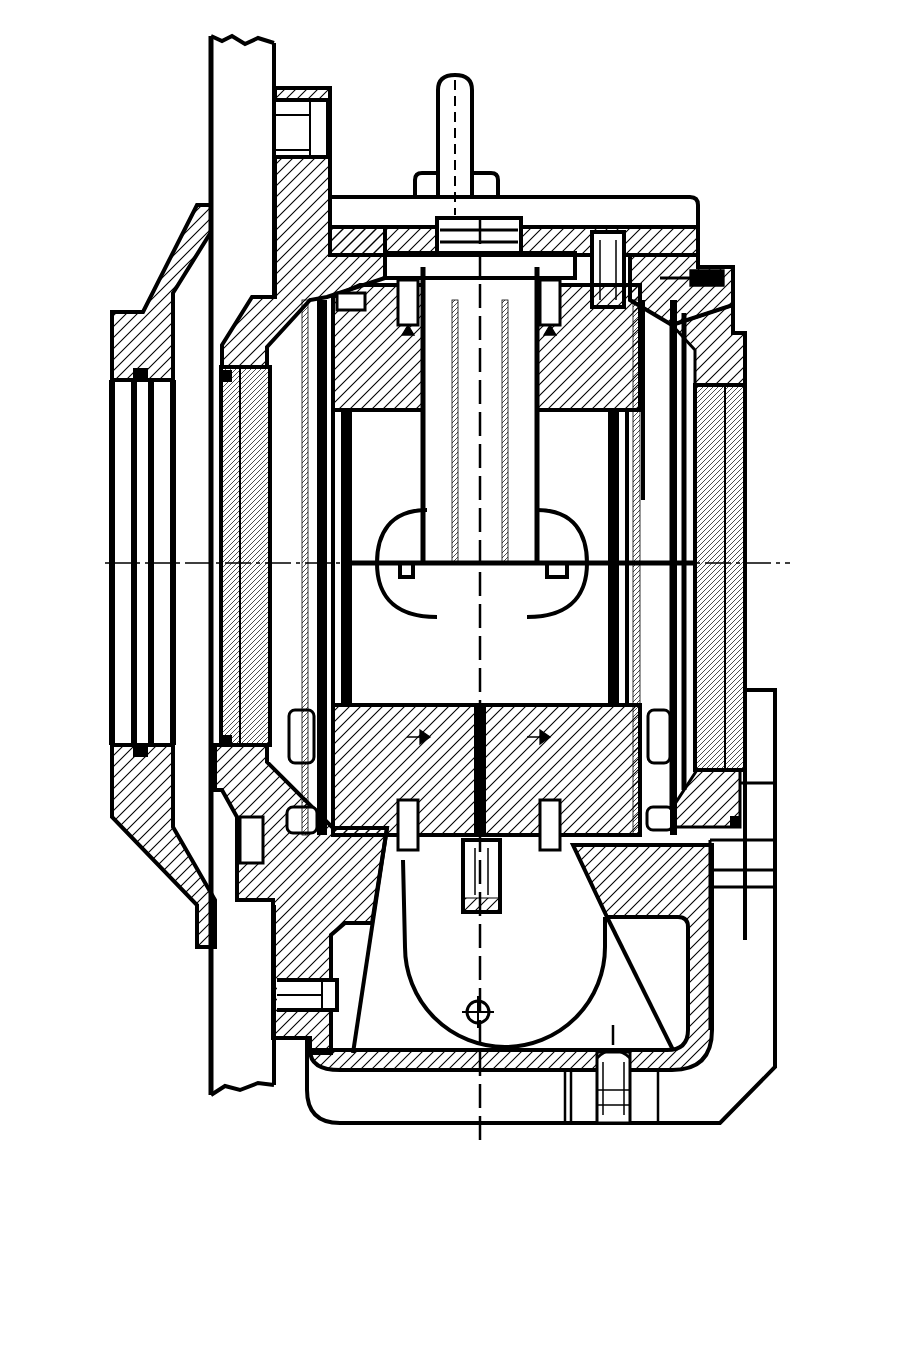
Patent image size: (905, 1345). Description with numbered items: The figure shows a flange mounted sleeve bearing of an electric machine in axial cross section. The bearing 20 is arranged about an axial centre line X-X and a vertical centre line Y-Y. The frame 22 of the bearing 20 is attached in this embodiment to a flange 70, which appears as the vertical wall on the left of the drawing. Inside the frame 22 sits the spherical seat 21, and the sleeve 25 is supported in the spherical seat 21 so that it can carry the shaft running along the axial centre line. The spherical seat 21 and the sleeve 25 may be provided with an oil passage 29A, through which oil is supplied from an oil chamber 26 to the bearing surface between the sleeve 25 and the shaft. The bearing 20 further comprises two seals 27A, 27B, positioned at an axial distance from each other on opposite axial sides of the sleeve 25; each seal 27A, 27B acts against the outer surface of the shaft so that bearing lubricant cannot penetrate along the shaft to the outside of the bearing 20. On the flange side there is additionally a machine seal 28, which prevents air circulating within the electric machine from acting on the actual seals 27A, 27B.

The bearing 20 is at (608, 63).
The flange 70 is at (228, 92).
The spherical seat 21 is at (383, 335).
The frame 22 is at (662, 237).
The sleeve 25 is at (388, 425).
The oil chamber 26 is at (492, 286).
The seal 27A is at (254, 366).
The seal 27B is at (738, 333).
The machine seal 28 is at (133, 314).
The oil passage 29A is at (497, 422).